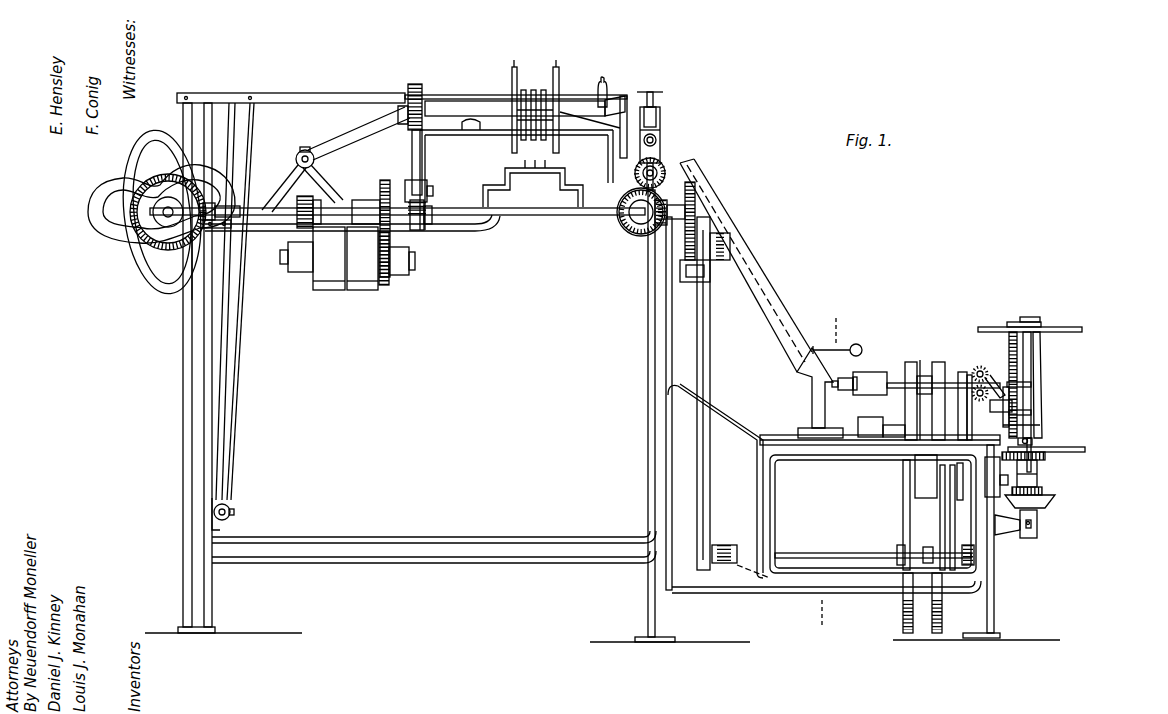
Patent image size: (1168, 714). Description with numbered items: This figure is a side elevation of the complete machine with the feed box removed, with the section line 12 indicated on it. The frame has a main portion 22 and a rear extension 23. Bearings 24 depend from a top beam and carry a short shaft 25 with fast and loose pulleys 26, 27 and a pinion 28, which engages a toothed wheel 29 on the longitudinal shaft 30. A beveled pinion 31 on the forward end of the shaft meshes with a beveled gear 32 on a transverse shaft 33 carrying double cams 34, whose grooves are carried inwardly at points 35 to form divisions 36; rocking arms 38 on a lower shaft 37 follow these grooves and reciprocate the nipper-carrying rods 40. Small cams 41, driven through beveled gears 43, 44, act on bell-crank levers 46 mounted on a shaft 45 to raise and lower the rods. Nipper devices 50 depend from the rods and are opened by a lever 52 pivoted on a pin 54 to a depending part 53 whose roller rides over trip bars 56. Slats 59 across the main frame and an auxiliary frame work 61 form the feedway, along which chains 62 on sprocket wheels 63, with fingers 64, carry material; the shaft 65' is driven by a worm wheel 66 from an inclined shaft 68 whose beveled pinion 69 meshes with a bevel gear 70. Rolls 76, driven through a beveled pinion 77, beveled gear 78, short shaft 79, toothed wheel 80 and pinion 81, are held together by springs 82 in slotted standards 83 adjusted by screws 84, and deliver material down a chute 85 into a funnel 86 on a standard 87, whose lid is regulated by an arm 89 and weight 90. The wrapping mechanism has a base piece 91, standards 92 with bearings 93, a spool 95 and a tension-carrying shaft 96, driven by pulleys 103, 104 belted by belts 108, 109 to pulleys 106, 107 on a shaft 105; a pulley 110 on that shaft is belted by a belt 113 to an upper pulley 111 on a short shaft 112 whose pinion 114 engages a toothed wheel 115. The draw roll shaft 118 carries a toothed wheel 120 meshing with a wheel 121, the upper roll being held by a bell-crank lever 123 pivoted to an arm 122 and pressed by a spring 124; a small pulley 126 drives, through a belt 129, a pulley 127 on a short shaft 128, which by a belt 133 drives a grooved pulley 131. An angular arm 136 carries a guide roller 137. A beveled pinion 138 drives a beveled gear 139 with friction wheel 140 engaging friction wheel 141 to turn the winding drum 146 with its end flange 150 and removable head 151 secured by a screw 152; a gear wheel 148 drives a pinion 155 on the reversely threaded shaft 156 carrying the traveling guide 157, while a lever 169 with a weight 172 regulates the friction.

The section line 12 is at (824, 475).
The main portion of the frame 22 is at (648, 402).
The rear extension 23 is at (808, 449).
The bearings 24 is at (290, 242).
The short shaft 25 is at (414, 262).
The fast pulley 26 is at (330, 291).
The loose pulley 27 is at (365, 291).
The pinion 28 is at (387, 287).
The toothed wheel 29 is at (378, 182).
The longitudinal shaft 30 is at (510, 216).
The beveled pinion 31 is at (188, 300).
The beveled gear 32 is at (160, 228).
The transverse shaft 33 is at (166, 250).
The double cam 34 is at (148, 132).
The groove inward points 35 is at (145, 168).
The groove division 36 is at (214, 170).
The lower transverse shaft 37 is at (212, 514).
The rocking arm 38 is at (222, 378).
The nipper-carrying rod 40 is at (228, 93).
The small cam 41 is at (296, 163).
The beveled gear wheel 43 is at (318, 208).
The beveled gear wheel 44 is at (282, 192).
The transverse shaft 45 is at (310, 150).
The bell-crank lever 46 is at (350, 143).
The nipper device 50 is at (604, 108).
The lever 52 is at (582, 100).
The depending part 53 is at (624, 96).
The pivot pin 54 is at (600, 124).
The trip bar 56 is at (468, 120).
The slats 59 is at (533, 183).
The auxiliary frame work 61 is at (478, 136).
The chain 62 is at (510, 95).
The sprocket wheel 63 is at (515, 135).
The projecting finger 64 is at (514, 60).
The shaft 65' is at (515, 87).
The worm wheel 66 is at (414, 84).
The inclined shaft 68 is at (422, 146).
The beveled pinion 69 is at (424, 192).
The bevel gear 70 is at (430, 206).
The roll 76 is at (662, 138).
The beveled pinion 77 is at (660, 228).
The beveled gear wheel 78 is at (626, 228).
The short shaft 79 is at (630, 236).
The toothed wheel 80 is at (620, 218).
The pinion 81 is at (665, 175).
The coiled spring 82 is at (660, 130).
The slotted standard 83 is at (660, 110).
The screw 84 is at (656, 91).
The inclined chute 85 is at (760, 296).
The funnel 86 is at (810, 378).
The standard 87 is at (812, 410).
The arm 89 is at (822, 348).
The adjustable weight 90 is at (858, 344).
The base piece 91 is at (880, 440).
The standard 92 is at (890, 400).
The bearing 93 is at (891, 370).
The spool 95 is at (868, 378).
The tension-carrying shaft 96 is at (845, 390).
The pulley 103 is at (912, 360).
The pulley 104 is at (962, 372).
The shaft 105 is at (820, 553).
The belt pulley 106 is at (905, 512).
The belt pulley 107 is at (942, 600).
The endless belt 108 is at (915, 480).
The endless belt 109 is at (935, 620).
The belt pulley 110 is at (716, 545).
The upper pulley 111 is at (708, 235).
The short shaft 112 is at (732, 246).
The endless belt 113 is at (710, 356).
The pinion 114 is at (690, 283).
The toothed wheel 115 is at (697, 200).
The shaft 118 is at (964, 463).
The toothed wheel 120 is at (1000, 412).
The toothed wheel 121 is at (982, 366).
The arm 122 is at (1015, 395).
The bell-crank lever 123 is at (1030, 405).
The coiled spring 124 is at (1038, 424).
The small pulley 126 is at (975, 565).
The pulley 127 is at (955, 510).
The short shaft 128 is at (1003, 481).
The endless belt 129 is at (960, 530).
The grooved pulley 131 is at (969, 375).
The endless belt 133 is at (910, 444).
The angular arm 136 is at (1040, 400).
The grooved guide roller 137 is at (1025, 383).
The beveled pinion 138 is at (1040, 482).
The beveled gear 139 is at (1042, 490).
The friction wheel 140 is at (1050, 495).
The friction wheel 141 is at (1045, 510).
The winding drum 146 is at (1040, 340).
The gear wheel 148 is at (1047, 457).
The end flange 150 is at (1085, 449).
The removable head 151 is at (1078, 324).
The screw 152 is at (1036, 317).
The pinion 155 is at (998, 477).
The doubly and reversely screw-threaded shaft 156 is at (1010, 348).
The traveling guide 157 is at (1032, 440).
The lever 169 is at (1032, 528).
The weight 172 is at (1032, 525).